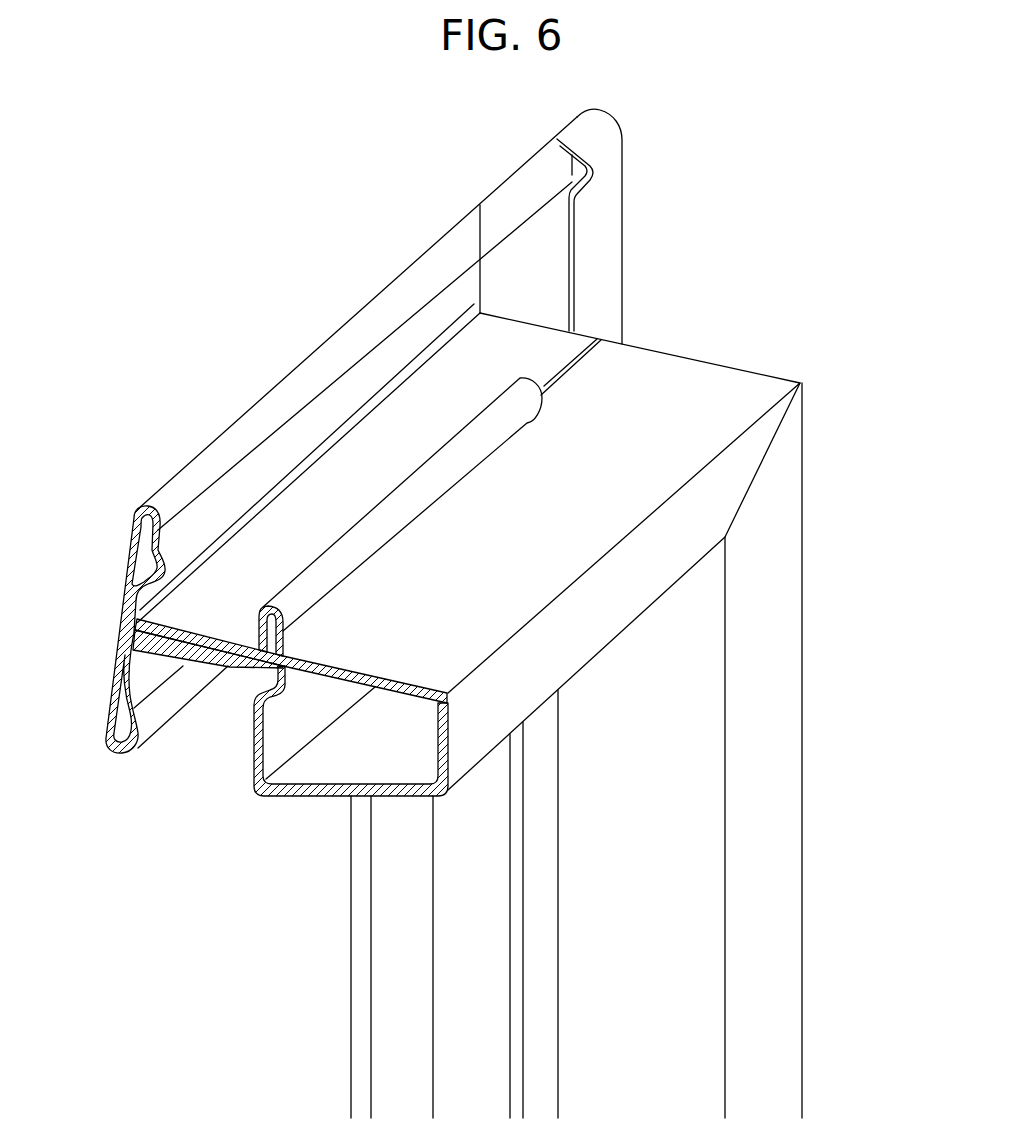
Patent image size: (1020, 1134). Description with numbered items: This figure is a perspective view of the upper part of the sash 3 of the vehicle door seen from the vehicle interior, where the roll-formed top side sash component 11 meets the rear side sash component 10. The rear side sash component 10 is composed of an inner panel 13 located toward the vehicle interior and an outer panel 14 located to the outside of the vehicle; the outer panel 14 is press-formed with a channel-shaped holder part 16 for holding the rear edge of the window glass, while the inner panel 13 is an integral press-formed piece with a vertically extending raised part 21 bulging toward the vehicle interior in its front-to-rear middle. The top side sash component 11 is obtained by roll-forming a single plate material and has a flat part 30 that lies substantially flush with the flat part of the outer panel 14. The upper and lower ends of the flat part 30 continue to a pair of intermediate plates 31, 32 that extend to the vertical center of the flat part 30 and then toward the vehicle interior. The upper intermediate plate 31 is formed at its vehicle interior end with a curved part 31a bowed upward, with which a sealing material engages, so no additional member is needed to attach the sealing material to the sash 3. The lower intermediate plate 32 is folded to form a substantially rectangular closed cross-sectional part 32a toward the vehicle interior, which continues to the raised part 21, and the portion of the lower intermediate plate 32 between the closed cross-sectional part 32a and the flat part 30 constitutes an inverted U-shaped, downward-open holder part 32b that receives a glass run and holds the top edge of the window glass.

The sash 3 is at (368, 151).
The rear side sash component 10 is at (836, 736).
The top side sash component 11 is at (256, 402).
The inner panel 13 is at (806, 580).
The outer panel 14 is at (348, 963).
The holder part 16 is at (411, 883).
The raised part 21 is at (785, 937).
The flat part 30 is at (118, 626).
The upper intermediate plate 31 is at (207, 633).
The curved part 31a is at (362, 534).
The lower intermediate plate 32 is at (153, 718).
The closed cross-sectional part 32a is at (252, 783).
The holder part 32b is at (230, 668).